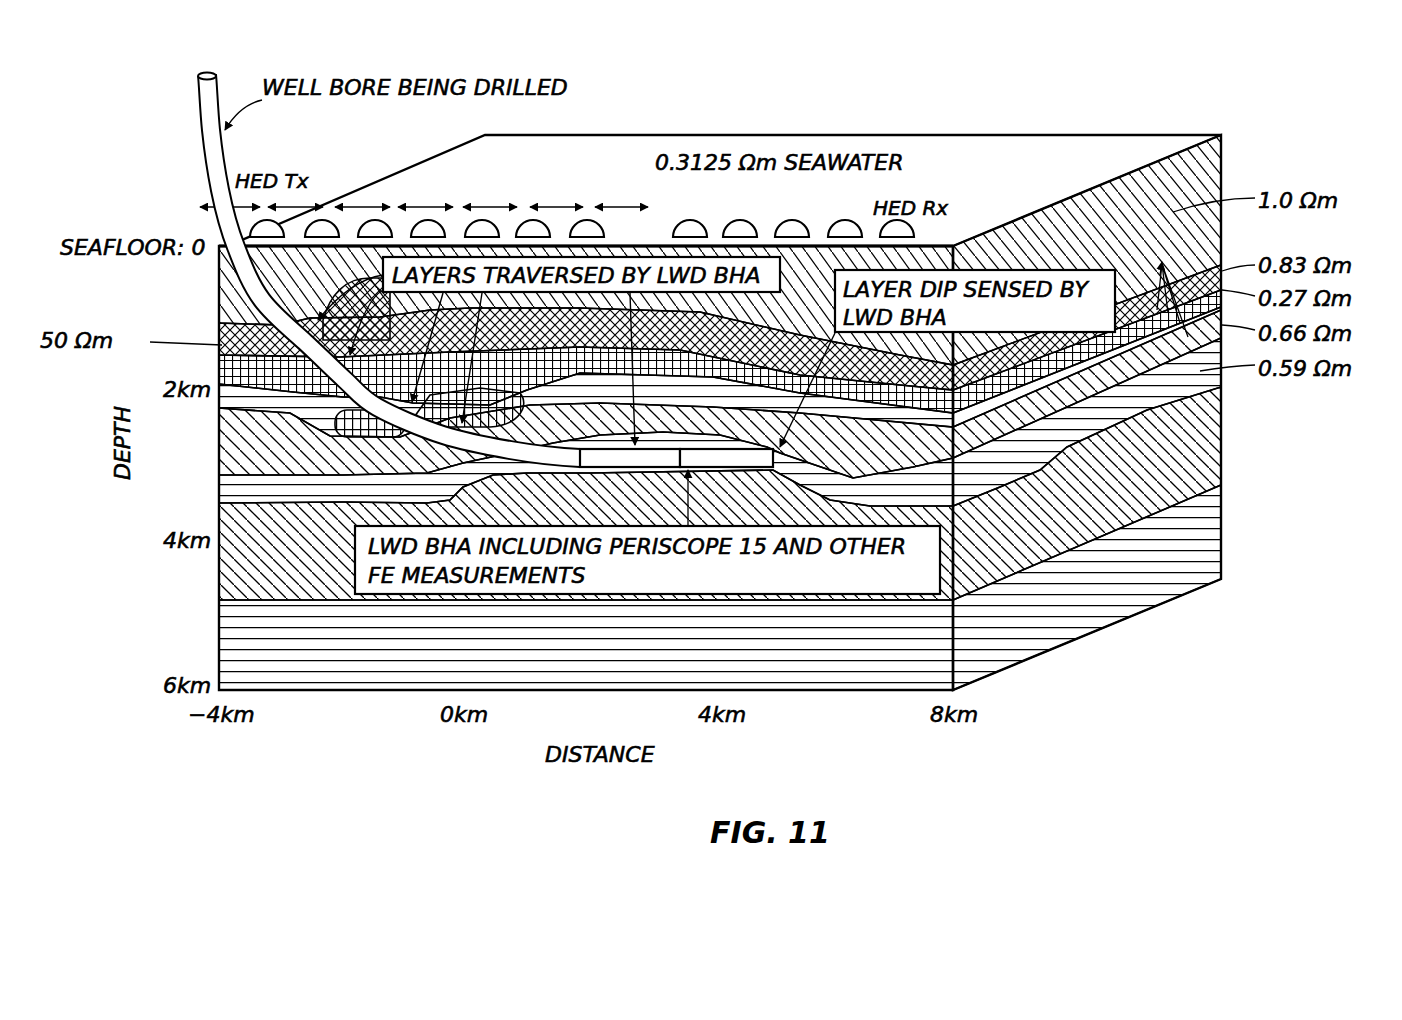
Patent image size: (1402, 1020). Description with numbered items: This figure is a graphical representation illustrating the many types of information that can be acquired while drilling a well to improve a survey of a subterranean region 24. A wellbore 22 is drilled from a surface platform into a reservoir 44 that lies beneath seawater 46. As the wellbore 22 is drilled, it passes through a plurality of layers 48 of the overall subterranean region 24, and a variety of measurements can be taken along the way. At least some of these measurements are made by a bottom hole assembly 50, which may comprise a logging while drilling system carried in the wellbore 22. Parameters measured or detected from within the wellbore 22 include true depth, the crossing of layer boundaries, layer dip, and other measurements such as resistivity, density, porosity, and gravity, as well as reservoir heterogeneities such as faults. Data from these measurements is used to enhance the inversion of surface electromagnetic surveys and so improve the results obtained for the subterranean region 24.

The wellbore 22 is at (198, 104).
The subterranean region 24 is at (1272, 435).
The reservoir 44 is at (573, 477).
The seawater 46 is at (1222, 160).
The layers 48 is at (1161, 289).
The bottom hole assembly 50 is at (700, 470).